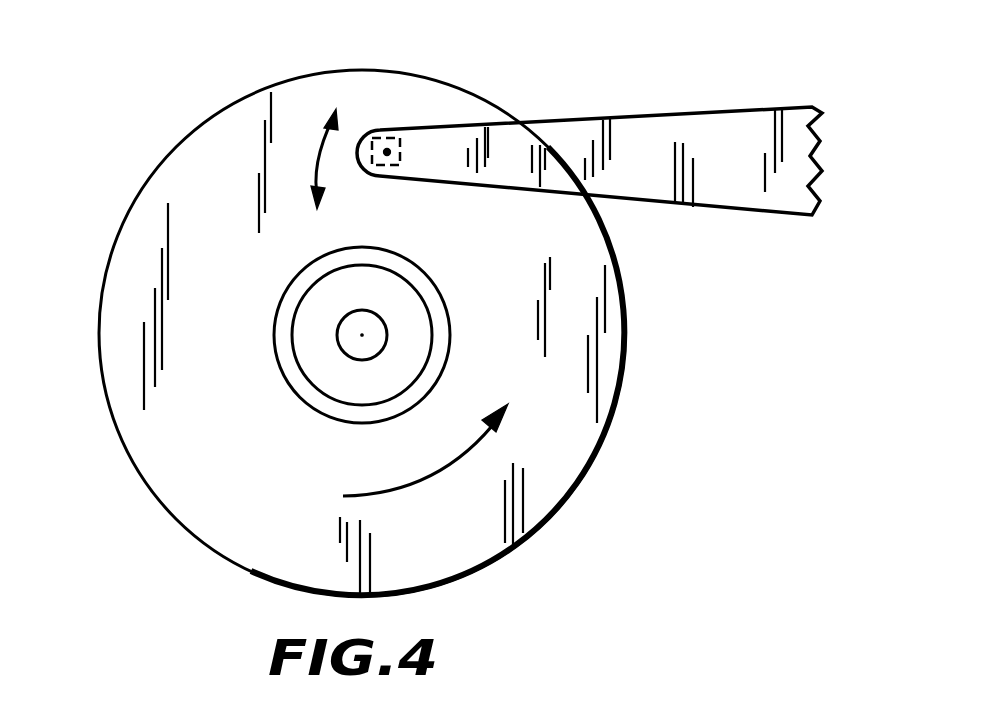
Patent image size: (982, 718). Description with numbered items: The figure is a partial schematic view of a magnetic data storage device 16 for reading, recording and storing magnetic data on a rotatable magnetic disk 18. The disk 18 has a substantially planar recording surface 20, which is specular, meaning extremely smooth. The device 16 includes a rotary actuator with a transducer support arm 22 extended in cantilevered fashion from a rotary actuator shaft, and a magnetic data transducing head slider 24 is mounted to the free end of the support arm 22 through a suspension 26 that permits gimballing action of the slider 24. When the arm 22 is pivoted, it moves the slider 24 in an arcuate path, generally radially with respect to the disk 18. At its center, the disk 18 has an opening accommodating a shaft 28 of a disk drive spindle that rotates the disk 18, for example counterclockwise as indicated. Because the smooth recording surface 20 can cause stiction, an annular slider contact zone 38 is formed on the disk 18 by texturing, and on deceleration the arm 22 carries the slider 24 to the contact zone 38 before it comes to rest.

The device 16 is at (140, 148).
The rotatable magnetic disk 18 is at (127, 388).
The recording surface 20 is at (254, 464).
The transducer support arm 22 is at (708, 122).
The magnetic data transducing head slider 24 is at (403, 155).
The suspension 26 is at (387, 150).
The shaft 28 is at (378, 334).
The annular slider contact zone 38 is at (285, 331).